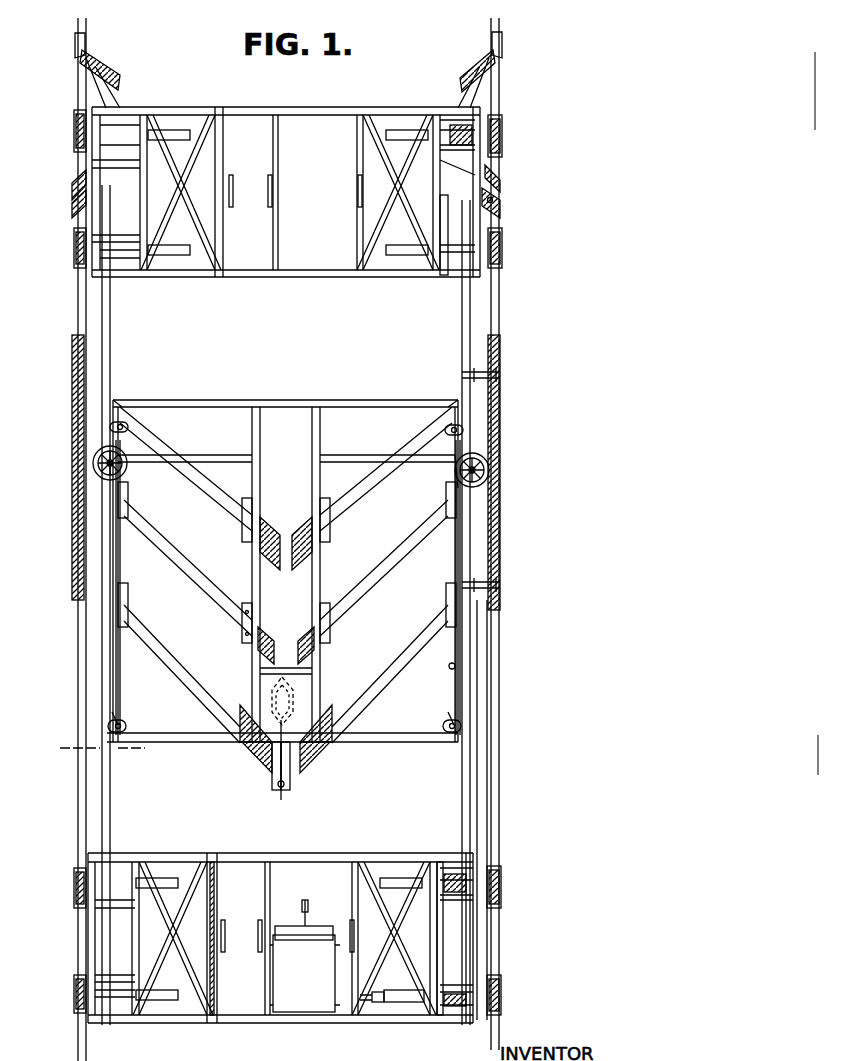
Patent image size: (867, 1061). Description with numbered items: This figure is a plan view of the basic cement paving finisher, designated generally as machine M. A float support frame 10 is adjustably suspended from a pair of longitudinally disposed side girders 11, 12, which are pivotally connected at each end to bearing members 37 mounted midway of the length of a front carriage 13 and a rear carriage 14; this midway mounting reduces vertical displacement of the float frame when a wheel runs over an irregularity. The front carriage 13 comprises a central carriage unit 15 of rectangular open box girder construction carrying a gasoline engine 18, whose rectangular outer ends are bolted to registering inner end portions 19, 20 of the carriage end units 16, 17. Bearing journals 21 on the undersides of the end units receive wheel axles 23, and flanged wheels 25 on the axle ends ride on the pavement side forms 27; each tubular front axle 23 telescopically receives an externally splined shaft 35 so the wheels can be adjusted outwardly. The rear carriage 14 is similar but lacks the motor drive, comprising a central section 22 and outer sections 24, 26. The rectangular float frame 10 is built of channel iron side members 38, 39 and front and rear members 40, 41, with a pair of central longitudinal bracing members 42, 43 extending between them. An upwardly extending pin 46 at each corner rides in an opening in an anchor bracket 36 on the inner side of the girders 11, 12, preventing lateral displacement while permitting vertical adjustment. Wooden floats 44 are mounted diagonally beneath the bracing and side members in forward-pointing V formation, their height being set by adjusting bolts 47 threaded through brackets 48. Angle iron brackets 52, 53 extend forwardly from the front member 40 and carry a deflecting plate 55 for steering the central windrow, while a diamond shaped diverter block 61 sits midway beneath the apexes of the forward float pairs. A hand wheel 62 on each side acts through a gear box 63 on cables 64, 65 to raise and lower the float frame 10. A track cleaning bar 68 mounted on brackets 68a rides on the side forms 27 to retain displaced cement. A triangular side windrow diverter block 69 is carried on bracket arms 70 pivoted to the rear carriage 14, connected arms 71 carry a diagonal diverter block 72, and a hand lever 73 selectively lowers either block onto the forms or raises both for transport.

The float support frame 10 is at (216, 400).
The side frame girder 11 is at (96, 755).
The side frame girder 12 is at (464, 782).
The front carriage 13 is at (152, 1024).
The rear carriage 14 is at (330, 107).
The central carriage unit 15 is at (287, 860).
The carriage end unit 16 is at (158, 860).
The carriage end unit 17 is at (384, 860).
The gasoline engine 18 is at (300, 1000).
The inner end portion 19 is at (90, 748).
The inner end portion 20 is at (211, 1024).
The bearing journal 21 is at (462, 868).
The central section 22 is at (248, 110).
The wheel axle 23 is at (402, 997).
The outer section 24 is at (176, 110).
The flanged wheel 25 is at (500, 136).
The outer section 26 is at (400, 110).
The pavement side form 27 is at (488, 740).
The splined shaft 35 is at (380, 1003).
The anchor bracket 36 is at (112, 712).
The bearing member 37 is at (104, 195).
The side frame member 38 is at (114, 645).
The side frame member 39 is at (458, 666).
The front float frame member 40 is at (174, 736).
The rear float frame member 41 is at (158, 400).
The central longitudinal bracing member 42 is at (258, 425).
The central longitudinal bracing member 43 is at (320, 425).
The float 44 is at (186, 556).
The pin 46 is at (112, 727).
The adjusting bolt 47 is at (241, 615).
The bracket 48 is at (244, 640).
The angle iron bracket 52 is at (273, 780).
The angle iron bracket 53 is at (292, 780).
The deflecting plate 55 is at (280, 795).
The diverter block 61 is at (298, 690).
The hand wheel 62 is at (94, 465).
The gear box 63 is at (470, 498).
The cable 64 is at (460, 690).
The cable 65 is at (470, 440).
The track cleaning bar 68 is at (74, 528).
The bracket 68a is at (478, 375).
The side windrow diverter block 69 is at (500, 205).
The bracket arm 70 is at (500, 172).
The bracket arm 71 is at (466, 100).
The windrow diverter block 72 is at (503, 52).
The hand lever 73 is at (438, 115).
The machine M is at (503, 546).